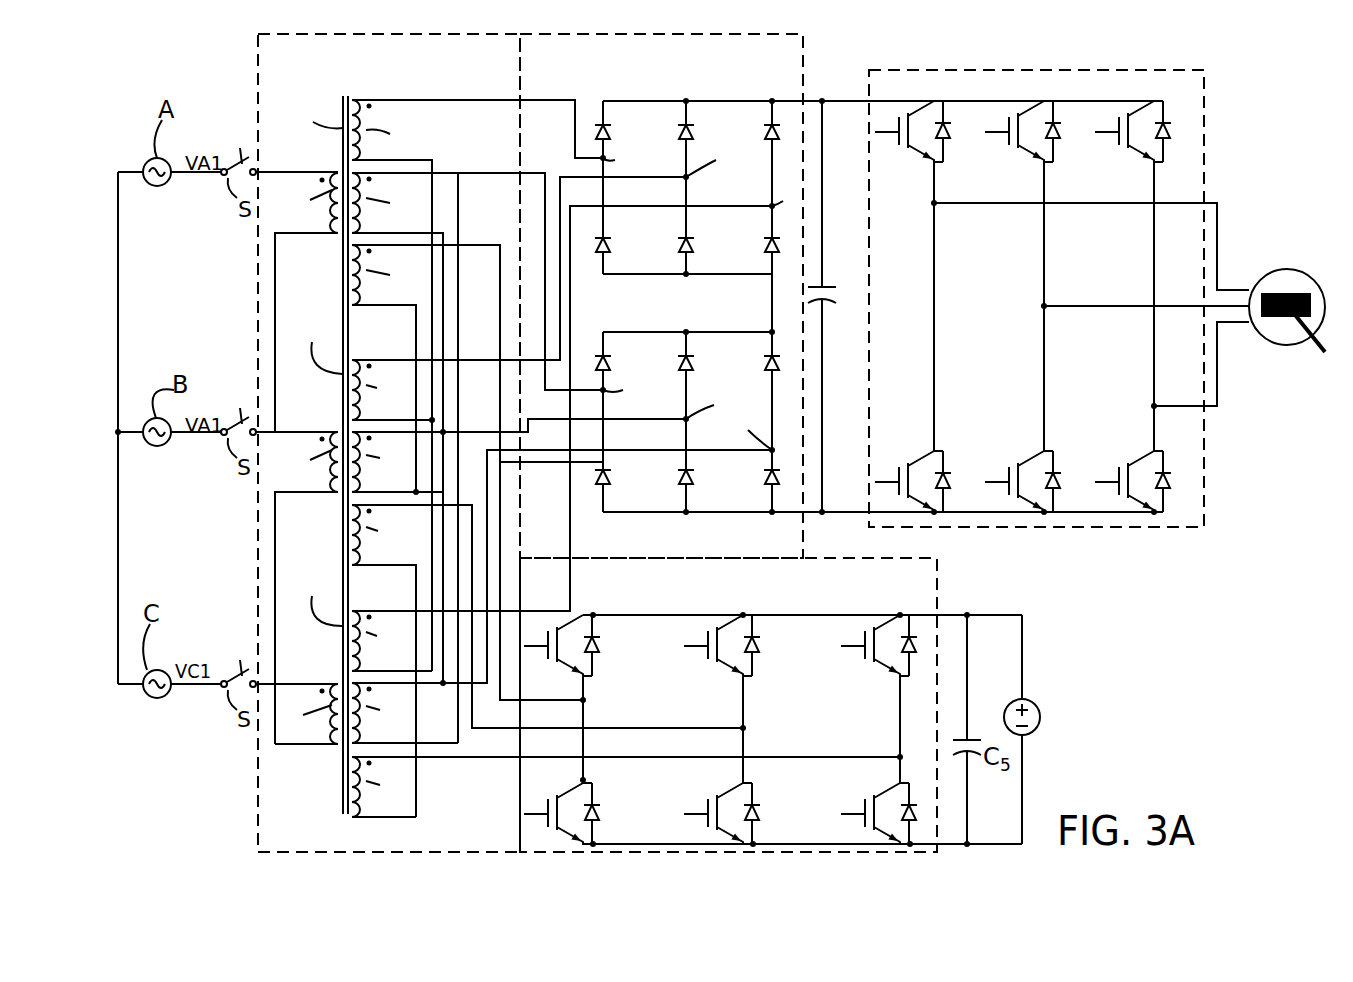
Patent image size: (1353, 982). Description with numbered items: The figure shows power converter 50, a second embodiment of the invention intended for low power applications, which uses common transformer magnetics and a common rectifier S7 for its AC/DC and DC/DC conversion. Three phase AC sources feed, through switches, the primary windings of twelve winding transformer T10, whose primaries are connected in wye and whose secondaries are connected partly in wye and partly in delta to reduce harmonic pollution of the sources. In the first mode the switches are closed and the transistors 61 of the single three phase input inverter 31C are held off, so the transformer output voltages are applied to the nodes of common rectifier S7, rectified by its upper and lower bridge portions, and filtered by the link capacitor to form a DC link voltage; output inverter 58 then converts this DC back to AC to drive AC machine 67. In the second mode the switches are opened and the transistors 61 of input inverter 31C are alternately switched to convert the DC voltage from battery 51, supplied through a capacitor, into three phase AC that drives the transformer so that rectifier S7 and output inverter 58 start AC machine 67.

The power converter 50 is at (1120, 56).
The output inverter 58 is at (900, 70).
The AC machine 67 is at (1273, 268).
The transistors 61 is at (540, 652).
The battery 51 is at (1034, 703).
The three phase input inverter 31C is at (853, 596).
The twelve winding transformer T10 is at (503, 66).
The common rectifier S7 is at (785, 91).